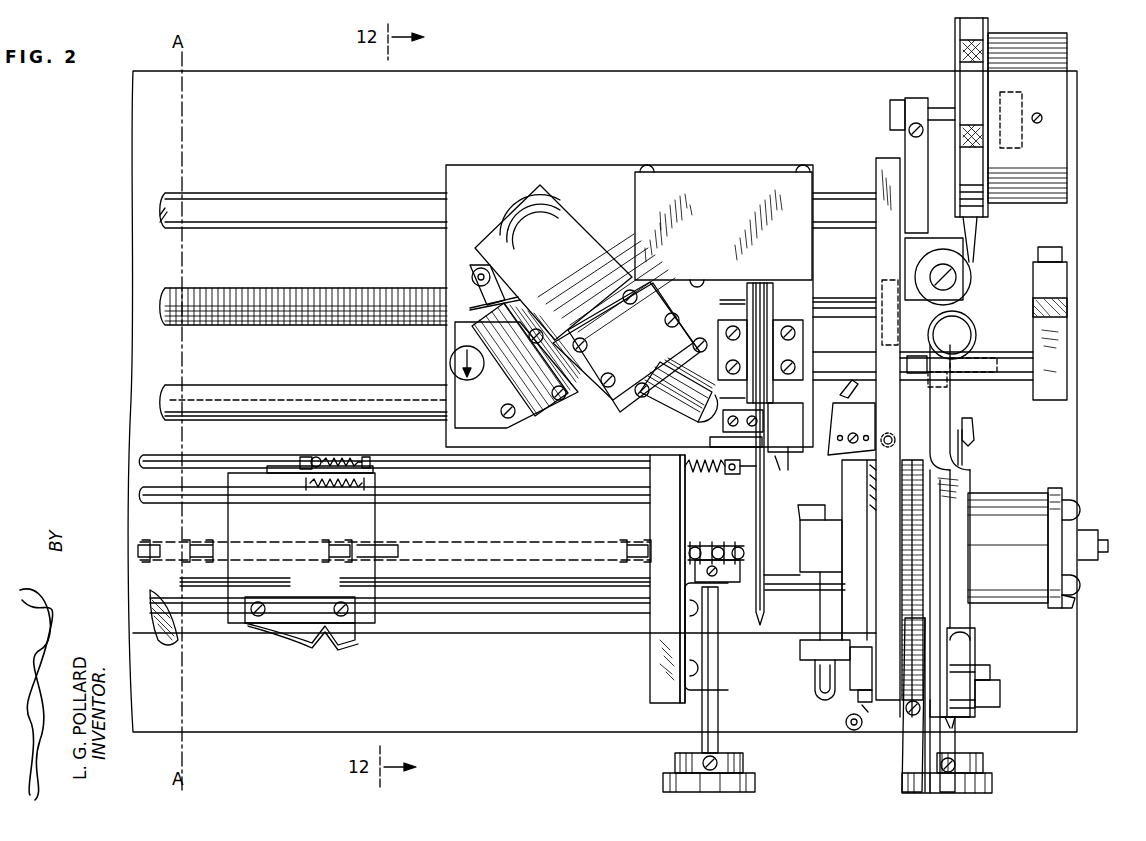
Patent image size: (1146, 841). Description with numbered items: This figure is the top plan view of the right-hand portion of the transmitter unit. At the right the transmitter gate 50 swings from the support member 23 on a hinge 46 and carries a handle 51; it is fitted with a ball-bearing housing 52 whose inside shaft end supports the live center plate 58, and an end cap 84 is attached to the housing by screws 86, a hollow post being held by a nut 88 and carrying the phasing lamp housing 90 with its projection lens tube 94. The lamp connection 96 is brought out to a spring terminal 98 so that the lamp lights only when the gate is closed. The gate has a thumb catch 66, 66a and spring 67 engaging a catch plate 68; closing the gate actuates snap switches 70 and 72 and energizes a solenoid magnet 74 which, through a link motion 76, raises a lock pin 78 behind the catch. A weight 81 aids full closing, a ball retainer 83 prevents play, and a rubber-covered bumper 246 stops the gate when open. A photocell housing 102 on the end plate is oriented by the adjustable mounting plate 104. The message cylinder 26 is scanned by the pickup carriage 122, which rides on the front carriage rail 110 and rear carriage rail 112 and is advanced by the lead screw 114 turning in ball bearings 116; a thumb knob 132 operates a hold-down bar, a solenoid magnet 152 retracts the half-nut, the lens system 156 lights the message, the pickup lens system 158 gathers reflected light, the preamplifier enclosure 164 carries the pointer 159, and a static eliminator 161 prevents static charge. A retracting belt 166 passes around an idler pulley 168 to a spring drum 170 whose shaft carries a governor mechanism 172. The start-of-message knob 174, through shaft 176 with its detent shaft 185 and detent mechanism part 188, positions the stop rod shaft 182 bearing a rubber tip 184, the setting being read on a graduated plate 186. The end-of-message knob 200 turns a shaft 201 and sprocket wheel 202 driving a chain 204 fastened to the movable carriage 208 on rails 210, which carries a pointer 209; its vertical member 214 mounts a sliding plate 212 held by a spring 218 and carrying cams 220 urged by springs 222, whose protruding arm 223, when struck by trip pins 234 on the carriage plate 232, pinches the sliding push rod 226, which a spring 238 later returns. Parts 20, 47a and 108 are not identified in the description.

The base frame 20 is at (465, 724).
The support member 23 is at (878, 184).
The message cylinder 26 is at (510, 626).
The hinge 46 is at (960, 318).
The pivot boss 47a is at (968, 332).
The transmitter gate 50 is at (957, 531).
The handle 51 is at (955, 744).
The ball-bearing housing 52 is at (1022, 493).
The live center plate 58 is at (912, 532).
The thumb catch 66 is at (905, 760).
The thumb catch 66a is at (868, 716).
The spring 67 is at (925, 748).
The catch plate 68 is at (877, 692).
The snap switch 70 is at (910, 356).
The snap switch 72 is at (862, 668).
The solenoid magnet 74 is at (806, 660).
The link motion 76 is at (846, 702).
The lock pin 78 is at (848, 727).
The weight 81 is at (968, 652).
The ball retainer 83 is at (904, 690).
The end cap 84 is at (1056, 488).
The screws 86 is at (1076, 602).
The nut 88 is at (1074, 505).
The phasing lamp housing 90 is at (812, 590).
The tube 94 is at (808, 505).
The connection 96 is at (975, 436).
The spring terminal 98 is at (913, 572).
The photocell housing 102 is at (822, 440).
The adjustable photocell mounting plate 104 is at (876, 425).
The plate 108 is at (830, 617).
The front carriage rail 110 is at (344, 390).
The rear carriage rail 112 is at (342, 205).
The lead screw 114 is at (356, 291).
The ball bearings 116 is at (882, 335).
The pickup carriage 122 is at (608, 196).
The thumb knob 132 is at (450, 363).
The solenoid magnet 152 is at (506, 384).
The lens system 156 is at (674, 428).
The pickup lens system 158 is at (747, 400).
The pointer 159 is at (764, 574).
The static eliminator 161 is at (712, 437).
The enclosure 164 is at (730, 183).
The retracting belt 166 is at (976, 237).
The idler pulley 168 is at (968, 282).
The spring drum 170 is at (955, 47).
The governor mechanism 172 is at (1060, 152).
The knob 174 is at (992, 786).
The shaft 176 is at (962, 458).
The shaft 182 is at (848, 392).
The rubber tip 184 is at (876, 320).
The shaft 185 is at (955, 728).
The graduated plate 186 is at (1000, 700).
The detent mechanism part 188 is at (992, 672).
The knob 200 is at (672, 764).
The shaft 201 is at (700, 740).
The sprocket wheel 202 is at (748, 528).
The chain 204 is at (470, 540).
The movable carriage 208 is at (330, 588).
The pointer 209 is at (328, 648).
The rails 210 is at (148, 496).
The sliding plate 212 is at (362, 466).
The vertical member 214 is at (248, 476).
The spring 218 is at (342, 489).
The cams 220 is at (304, 456).
The springs 222 is at (340, 458).
The protruding arm 223 is at (318, 455).
The sliding push rod 226 is at (148, 460).
The plate 232 is at (786, 455).
The trip pins 234 is at (730, 474).
The spring 238 is at (698, 474).
The rubber-covered bumper 246 is at (1067, 298).